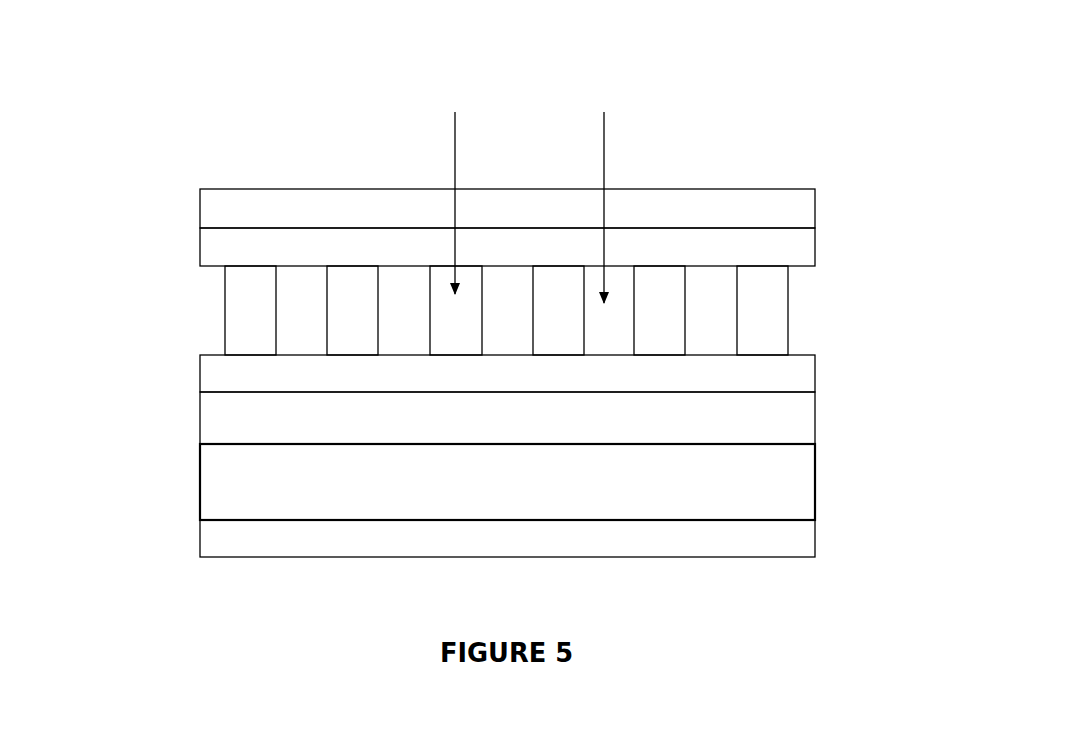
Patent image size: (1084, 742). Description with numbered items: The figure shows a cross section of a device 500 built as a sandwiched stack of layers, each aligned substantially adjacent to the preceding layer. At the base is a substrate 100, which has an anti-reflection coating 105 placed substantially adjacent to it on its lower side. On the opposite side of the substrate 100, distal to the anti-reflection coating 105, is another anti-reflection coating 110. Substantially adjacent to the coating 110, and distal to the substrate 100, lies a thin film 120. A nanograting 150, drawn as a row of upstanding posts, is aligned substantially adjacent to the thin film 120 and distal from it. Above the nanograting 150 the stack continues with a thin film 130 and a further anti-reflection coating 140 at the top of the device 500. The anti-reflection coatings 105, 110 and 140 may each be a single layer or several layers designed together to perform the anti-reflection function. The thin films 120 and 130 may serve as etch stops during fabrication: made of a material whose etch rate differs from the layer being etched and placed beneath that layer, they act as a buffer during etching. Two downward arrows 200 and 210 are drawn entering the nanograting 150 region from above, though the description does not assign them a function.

The device 500 is at (433, 319).
The anti-reflection coating 140 is at (507, 208).
The thin film 130 is at (507, 248).
The nanograting 150 is at (824, 312).
The thin film 120 is at (507, 373).
The anti-reflection coating 110 is at (507, 418).
The substrate 100 is at (507, 482).
The anti-reflection coating 105 is at (507, 540).
The incident flow / radiation arrow 200 is at (457, 183).
The incident flow / radiation arrow 210 is at (604, 187).